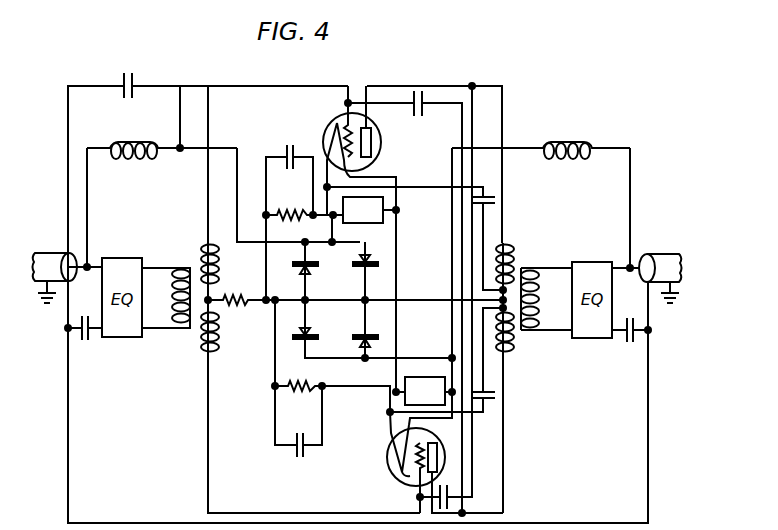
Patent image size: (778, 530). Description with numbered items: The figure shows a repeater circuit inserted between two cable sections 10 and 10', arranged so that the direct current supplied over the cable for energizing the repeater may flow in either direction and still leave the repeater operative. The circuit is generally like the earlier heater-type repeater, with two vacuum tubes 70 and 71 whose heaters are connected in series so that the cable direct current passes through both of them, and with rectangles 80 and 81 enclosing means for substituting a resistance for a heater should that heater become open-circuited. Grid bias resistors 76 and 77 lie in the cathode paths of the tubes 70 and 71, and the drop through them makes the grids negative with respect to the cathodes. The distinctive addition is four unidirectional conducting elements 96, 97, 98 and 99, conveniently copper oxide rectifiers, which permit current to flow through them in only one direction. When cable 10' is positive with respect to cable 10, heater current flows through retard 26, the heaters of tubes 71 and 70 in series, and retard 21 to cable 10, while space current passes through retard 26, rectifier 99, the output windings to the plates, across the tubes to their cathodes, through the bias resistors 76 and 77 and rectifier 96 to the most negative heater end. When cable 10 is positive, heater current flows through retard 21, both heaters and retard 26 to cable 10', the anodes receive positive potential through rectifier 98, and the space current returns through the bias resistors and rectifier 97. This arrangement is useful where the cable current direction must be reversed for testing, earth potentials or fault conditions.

The cable section 10 is at (54, 258).
The cable section 10' is at (660, 265).
The retard coil 21 is at (146, 121).
The retard coil 26 is at (570, 138).
The vacuum tube 70 is at (382, 150).
The vacuum tube 71 is at (388, 463).
The grid bias resistor 76 is at (300, 209).
The grid bias resistor 77 is at (312, 390).
The heater protection device 80 is at (368, 223).
The heater protection device 81 is at (433, 376).
The unidirectional conducting element 96 is at (309, 267).
The unidirectional conducting element 97 is at (308, 339).
The unidirectional conducting element 98 is at (362, 268).
The unidirectional conducting element 99 is at (360, 335).